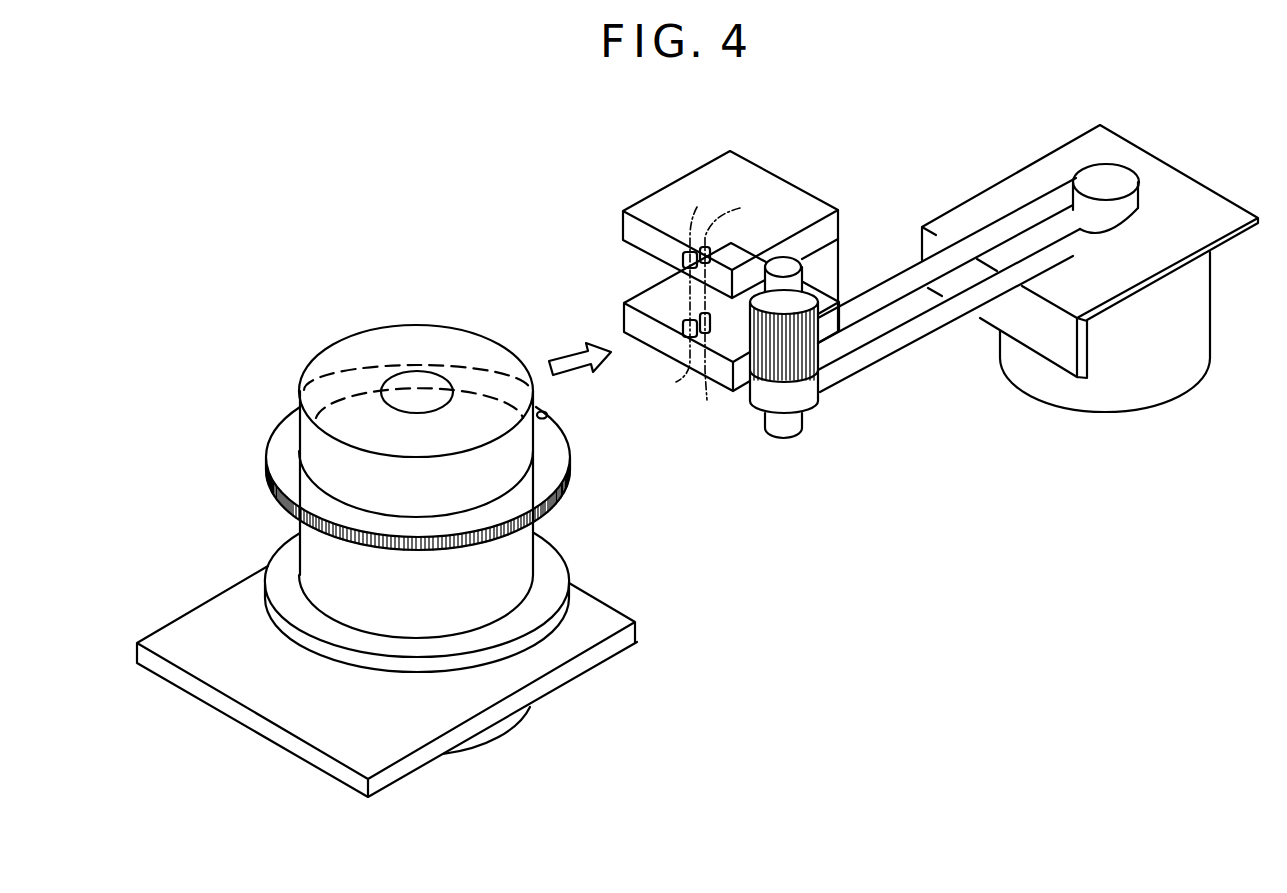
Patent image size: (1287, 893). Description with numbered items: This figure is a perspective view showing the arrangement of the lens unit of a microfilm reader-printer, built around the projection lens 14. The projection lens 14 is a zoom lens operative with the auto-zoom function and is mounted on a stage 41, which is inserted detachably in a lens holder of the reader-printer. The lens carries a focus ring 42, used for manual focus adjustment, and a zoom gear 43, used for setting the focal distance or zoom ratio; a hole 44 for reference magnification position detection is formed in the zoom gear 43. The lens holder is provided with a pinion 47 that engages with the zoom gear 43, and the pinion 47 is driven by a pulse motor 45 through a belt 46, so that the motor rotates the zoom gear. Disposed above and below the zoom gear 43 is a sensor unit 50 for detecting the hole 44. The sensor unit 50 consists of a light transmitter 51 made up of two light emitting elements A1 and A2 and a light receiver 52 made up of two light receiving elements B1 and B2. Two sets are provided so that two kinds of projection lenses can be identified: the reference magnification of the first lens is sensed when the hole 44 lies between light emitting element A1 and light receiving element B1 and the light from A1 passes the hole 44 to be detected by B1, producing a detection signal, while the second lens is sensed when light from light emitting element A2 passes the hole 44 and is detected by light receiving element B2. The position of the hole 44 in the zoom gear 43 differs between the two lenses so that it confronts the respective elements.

The projection lens 14 is at (345, 357).
The stage 41 is at (308, 713).
The focus ring 42 is at (558, 571).
The zoom gear 43 is at (296, 408).
The hole 44 is at (548, 417).
The pulse motor 45 is at (1200, 350).
The belt 46 is at (957, 315).
The pinion 47 is at (820, 358).
The sensor unit 50 is at (818, 208).
The light transmitter 51 is at (667, 200).
The light receiver 52 is at (632, 323).
The light emitting element A1 is at (740, 296).
The light emitting element A2 is at (701, 276).
The light receiving element B1 is at (707, 376).
The light receiving element B2 is at (676, 378).